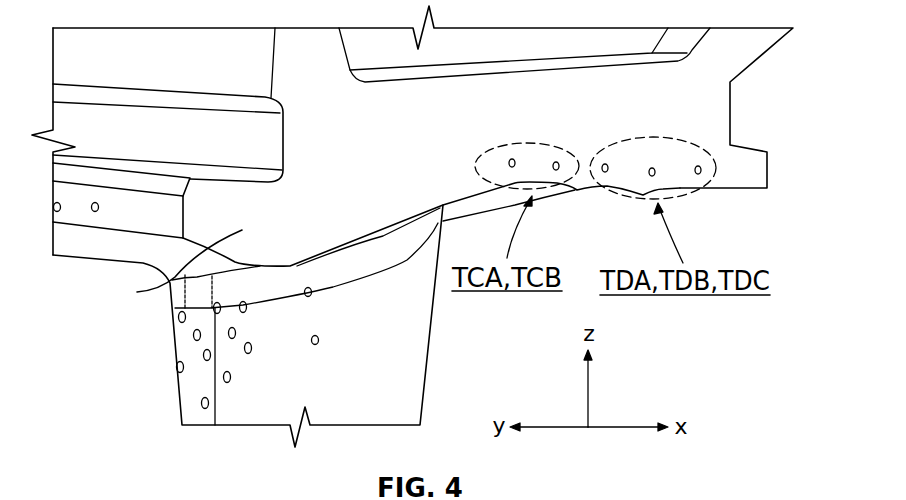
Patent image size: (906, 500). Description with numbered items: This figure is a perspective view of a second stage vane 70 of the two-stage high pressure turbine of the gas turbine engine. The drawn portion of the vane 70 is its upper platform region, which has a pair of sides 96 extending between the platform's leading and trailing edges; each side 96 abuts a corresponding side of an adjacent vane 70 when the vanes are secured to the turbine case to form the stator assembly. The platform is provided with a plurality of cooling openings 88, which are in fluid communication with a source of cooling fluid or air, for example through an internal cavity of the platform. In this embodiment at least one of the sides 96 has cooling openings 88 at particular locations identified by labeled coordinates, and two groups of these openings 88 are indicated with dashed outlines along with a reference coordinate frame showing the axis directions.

The second stage vane 70 is at (775, 101).
The cooling openings 88 is at (508, 164).
The sides 96 is at (175, 270).